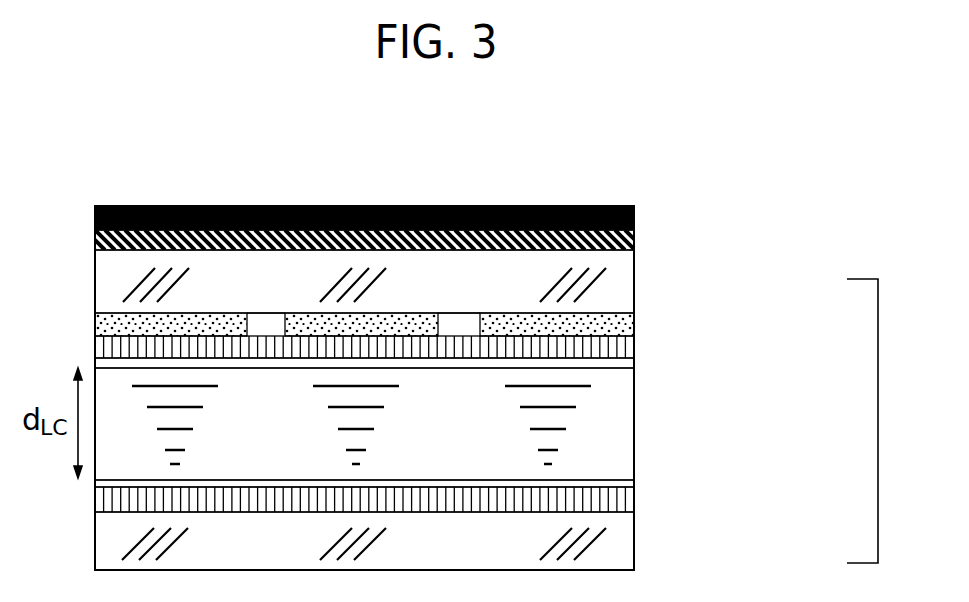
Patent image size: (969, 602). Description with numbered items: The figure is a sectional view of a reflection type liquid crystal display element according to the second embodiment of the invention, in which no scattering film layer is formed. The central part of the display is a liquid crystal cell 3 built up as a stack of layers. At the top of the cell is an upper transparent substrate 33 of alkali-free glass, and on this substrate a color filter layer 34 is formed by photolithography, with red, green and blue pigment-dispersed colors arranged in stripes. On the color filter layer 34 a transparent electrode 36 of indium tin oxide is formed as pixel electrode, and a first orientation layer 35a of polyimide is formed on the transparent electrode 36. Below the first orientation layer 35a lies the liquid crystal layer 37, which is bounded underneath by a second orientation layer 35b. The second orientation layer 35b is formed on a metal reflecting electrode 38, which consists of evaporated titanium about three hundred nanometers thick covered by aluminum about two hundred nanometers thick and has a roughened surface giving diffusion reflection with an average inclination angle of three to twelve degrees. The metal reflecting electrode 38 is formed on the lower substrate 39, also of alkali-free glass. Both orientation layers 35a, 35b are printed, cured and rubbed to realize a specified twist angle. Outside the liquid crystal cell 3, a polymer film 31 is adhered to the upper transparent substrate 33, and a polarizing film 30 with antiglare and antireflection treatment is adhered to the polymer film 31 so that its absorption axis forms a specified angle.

The liquid crystal cell 3 is at (876, 421).
The polarizing film 30 is at (634, 218).
The polymer film 31 is at (634, 243).
The upper transparent substrate 33 is at (620, 284).
The color filter layer 34 is at (634, 325).
The transparent electrode 36 is at (625, 350).
The first orientation layer 35a is at (625, 365).
The liquid crystal layer 37 is at (615, 428).
The second orientation layer 35b is at (634, 483).
The metal reflecting electrode 38 is at (625, 498).
The lower substrate 39 is at (612, 541).